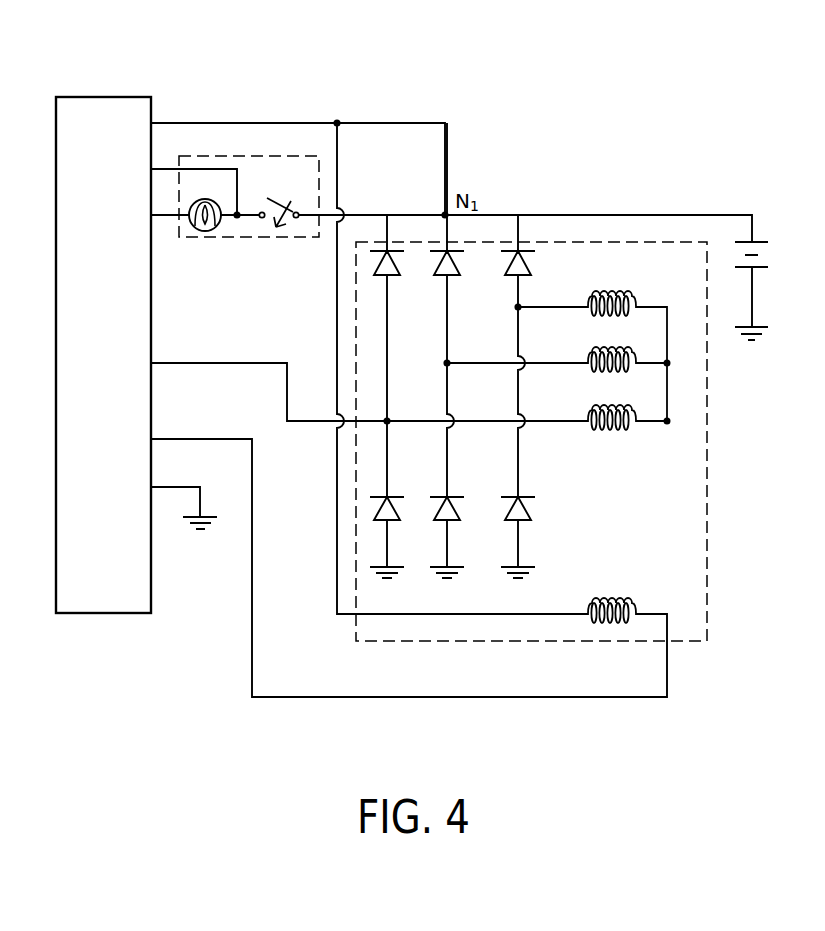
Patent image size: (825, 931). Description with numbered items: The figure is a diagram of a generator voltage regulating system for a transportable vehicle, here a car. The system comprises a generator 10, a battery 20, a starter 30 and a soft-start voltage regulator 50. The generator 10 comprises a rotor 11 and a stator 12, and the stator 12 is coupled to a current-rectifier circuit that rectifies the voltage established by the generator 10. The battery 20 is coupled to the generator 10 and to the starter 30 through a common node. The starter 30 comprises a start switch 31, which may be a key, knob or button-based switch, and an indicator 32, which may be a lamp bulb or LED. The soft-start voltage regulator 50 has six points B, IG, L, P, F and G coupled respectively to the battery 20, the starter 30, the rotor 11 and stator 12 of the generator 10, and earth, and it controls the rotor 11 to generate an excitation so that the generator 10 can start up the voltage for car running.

The soft-start voltage regulator 50 is at (103, 97).
The indicator 32 is at (217, 198).
The start switch 31 is at (281, 196).
The starter 30 is at (320, 183).
The stator 12 is at (612, 272).
The battery 20 is at (757, 241).
The generator 10 is at (708, 483).
The rotor 11 is at (638, 603).